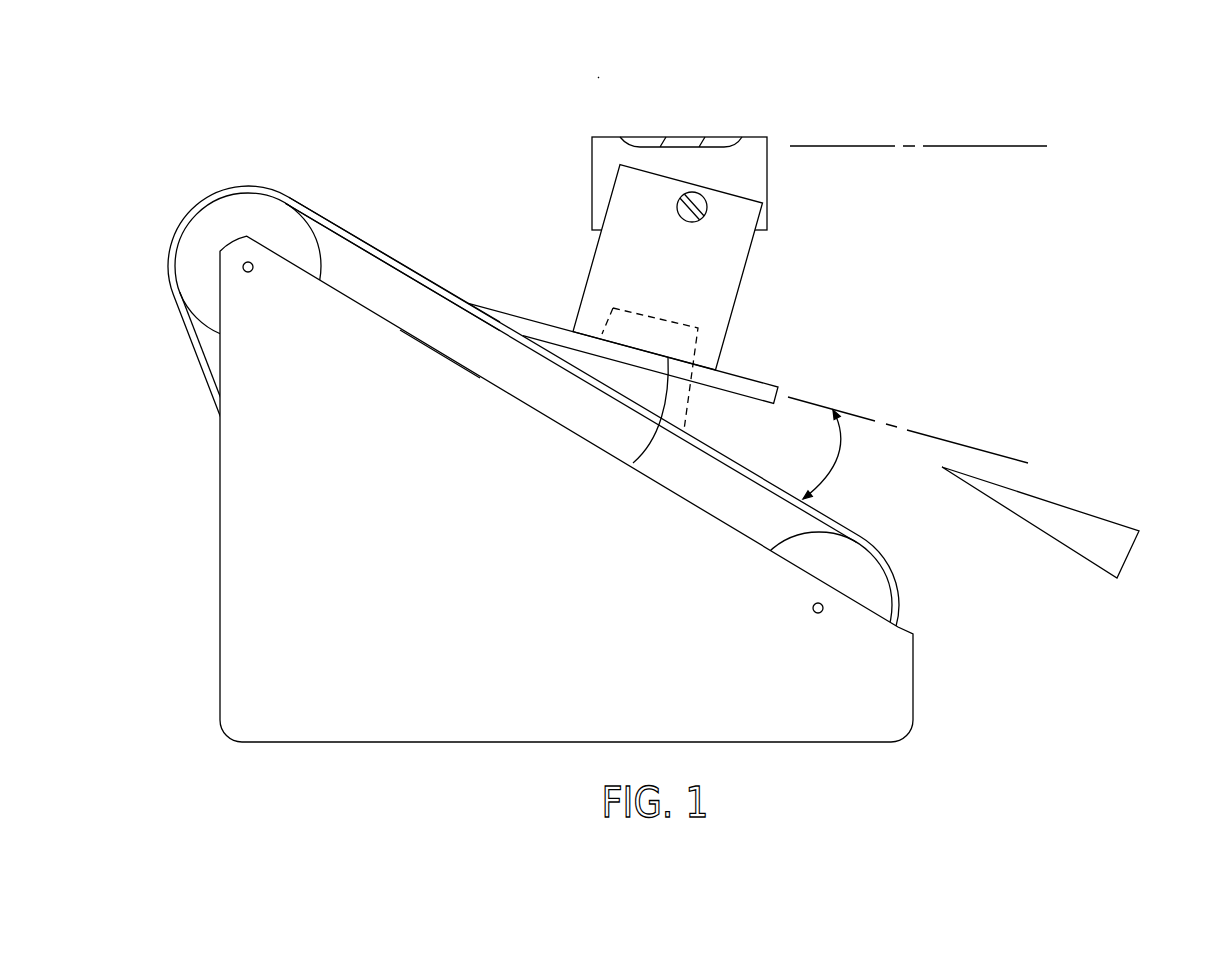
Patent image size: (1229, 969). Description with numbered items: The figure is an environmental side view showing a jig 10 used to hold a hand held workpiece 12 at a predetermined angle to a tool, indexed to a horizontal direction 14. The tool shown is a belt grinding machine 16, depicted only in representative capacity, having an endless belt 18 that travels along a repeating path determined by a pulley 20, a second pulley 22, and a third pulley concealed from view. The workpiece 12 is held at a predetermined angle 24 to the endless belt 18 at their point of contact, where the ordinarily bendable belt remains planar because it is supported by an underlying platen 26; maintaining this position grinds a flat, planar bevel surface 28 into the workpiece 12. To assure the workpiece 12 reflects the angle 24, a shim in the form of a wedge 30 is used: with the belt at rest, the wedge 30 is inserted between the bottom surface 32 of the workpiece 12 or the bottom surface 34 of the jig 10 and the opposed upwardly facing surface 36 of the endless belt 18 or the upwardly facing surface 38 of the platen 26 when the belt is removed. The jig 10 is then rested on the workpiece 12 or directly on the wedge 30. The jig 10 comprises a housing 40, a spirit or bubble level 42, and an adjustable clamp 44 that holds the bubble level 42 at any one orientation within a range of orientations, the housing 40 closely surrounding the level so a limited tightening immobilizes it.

The jig 10 is at (599, 78).
The hand held workpiece 12 is at (764, 383).
The horizontal direction 14 is at (982, 146).
The belt grinding machine 16 is at (443, 551).
The endless belt 18 is at (354, 232).
The pulley 20 is at (230, 220).
The pulley 22 is at (860, 578).
The predetermined angle 24 is at (838, 457).
The platen 26 is at (592, 411).
The bevel surface 28 is at (488, 326).
The wedge 30 is at (1136, 548).
The bottom surface of the workpiece 32 is at (730, 396).
The bottom surface of the jig 34 is at (633, 463).
The upwardly facing surface of the endless belt 36 is at (393, 256).
The upwardly facing surface of the platen 38 is at (417, 285).
The housing 40 is at (747, 288).
The bubble level 42 is at (742, 108).
The adjustable clamp 44 is at (686, 226).